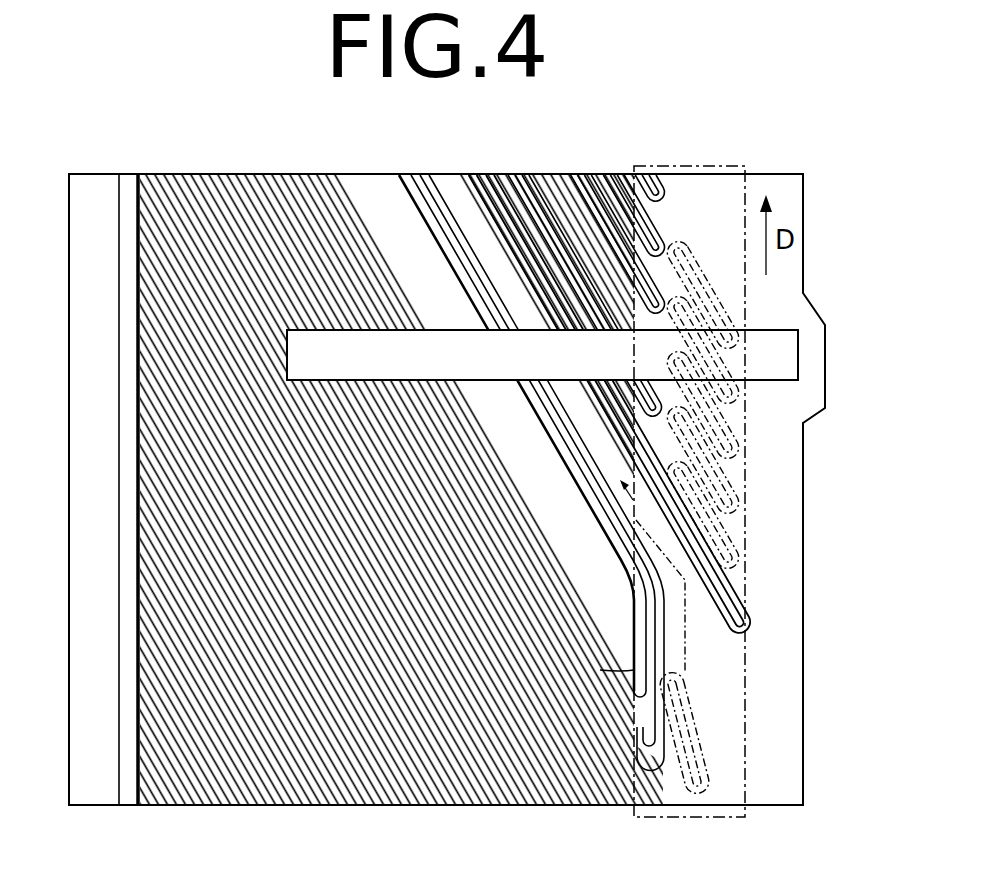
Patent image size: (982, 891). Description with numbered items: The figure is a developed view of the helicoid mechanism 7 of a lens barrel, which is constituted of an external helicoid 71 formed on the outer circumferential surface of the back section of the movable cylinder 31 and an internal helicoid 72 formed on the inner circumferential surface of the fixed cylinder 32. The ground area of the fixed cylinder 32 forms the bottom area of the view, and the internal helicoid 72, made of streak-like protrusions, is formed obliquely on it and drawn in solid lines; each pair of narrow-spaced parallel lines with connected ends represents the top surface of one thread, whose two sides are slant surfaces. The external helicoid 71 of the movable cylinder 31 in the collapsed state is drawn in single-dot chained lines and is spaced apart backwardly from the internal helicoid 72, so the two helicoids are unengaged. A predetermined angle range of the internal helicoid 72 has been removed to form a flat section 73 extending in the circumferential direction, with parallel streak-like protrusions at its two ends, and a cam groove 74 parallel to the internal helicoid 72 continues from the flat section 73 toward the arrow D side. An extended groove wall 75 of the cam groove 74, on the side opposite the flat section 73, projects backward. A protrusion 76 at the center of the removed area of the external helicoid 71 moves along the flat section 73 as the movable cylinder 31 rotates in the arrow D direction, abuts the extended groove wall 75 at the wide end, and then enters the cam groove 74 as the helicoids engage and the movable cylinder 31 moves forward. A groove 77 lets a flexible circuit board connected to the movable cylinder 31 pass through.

The helicoid mechanism 7 is at (524, 145).
The movable cylinder 31 is at (700, 167).
The fixed cylinder 32 is at (240, 164).
The external helicoid 71 is at (735, 442).
The internal helicoid 72 is at (310, 215).
The flat section 73 is at (643, 598).
The cam groove 74 is at (578, 410).
The extended groove wall 75 is at (743, 603).
The protrusion 76 is at (702, 757).
The groove 77 is at (450, 338).